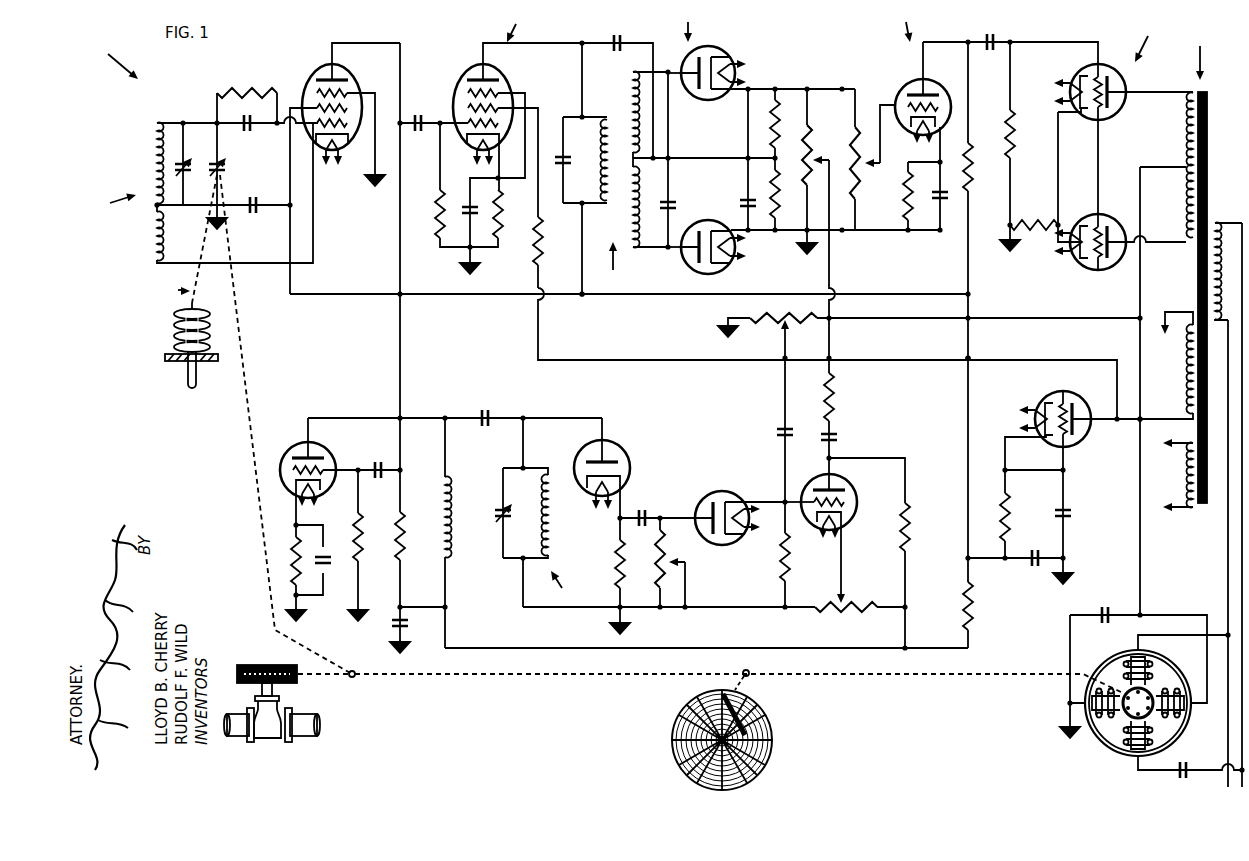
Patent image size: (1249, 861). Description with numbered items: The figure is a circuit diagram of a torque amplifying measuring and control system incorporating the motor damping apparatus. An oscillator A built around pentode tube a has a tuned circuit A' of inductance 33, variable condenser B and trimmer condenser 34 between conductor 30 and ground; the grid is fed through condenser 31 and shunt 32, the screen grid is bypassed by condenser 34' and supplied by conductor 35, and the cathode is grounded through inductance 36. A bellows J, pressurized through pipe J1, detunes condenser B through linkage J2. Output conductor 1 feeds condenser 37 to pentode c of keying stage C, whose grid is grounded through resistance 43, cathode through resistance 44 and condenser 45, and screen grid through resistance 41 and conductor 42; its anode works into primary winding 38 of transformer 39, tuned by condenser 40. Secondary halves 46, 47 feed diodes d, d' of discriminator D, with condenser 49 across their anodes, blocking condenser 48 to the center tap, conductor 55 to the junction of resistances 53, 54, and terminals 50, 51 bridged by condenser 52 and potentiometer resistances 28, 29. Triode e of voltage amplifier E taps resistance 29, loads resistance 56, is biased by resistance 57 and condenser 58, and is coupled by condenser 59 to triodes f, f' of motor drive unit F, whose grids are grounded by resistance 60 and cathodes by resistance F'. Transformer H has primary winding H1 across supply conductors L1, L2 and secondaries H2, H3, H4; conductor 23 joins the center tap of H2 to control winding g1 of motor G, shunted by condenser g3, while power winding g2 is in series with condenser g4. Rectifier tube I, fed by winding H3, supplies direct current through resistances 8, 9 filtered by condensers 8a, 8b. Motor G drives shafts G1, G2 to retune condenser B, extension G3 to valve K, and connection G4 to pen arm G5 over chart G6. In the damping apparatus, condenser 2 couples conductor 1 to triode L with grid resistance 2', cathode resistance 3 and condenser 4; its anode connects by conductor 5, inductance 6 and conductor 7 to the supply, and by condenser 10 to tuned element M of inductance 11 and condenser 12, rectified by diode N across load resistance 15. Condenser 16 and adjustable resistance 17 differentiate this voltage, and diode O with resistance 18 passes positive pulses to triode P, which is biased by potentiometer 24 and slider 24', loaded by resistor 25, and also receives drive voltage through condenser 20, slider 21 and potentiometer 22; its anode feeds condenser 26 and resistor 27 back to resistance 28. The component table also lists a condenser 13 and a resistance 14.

The conductor 1 is at (372, 43).
The coupling condenser 2 is at (361, 456).
The grid resistance 2' is at (367, 545).
The resistance 3 is at (297, 560).
The condenser 4 is at (328, 562).
The conductor 5 is at (348, 417).
The inductance 6 is at (445, 501).
The conductor 7 is at (693, 648).
The resistance 8 is at (960, 606).
The condenser 8a is at (1068, 514).
The condenser 8b is at (1032, 564).
The resistance 9 is at (1004, 511).
The condenser 10 is at (483, 414).
The inductance 11 is at (542, 533).
The adjustable condenser 12 is at (496, 518).
The condenser 13 is at (392, 624).
The resistance 14 is at (400, 537).
The load resistance 15 is at (619, 561).
The condenser 16 is at (642, 510).
The adjustable resistance 17 is at (660, 561).
The resistance 18 is at (784, 557).
The coupling condenser 20 is at (776, 432).
The slider contact 21 is at (782, 330).
The potentiometer resistance 22 is at (782, 317).
The conductor 23 is at (1138, 291).
The potentiometer resistance 24 is at (714, 618).
The slider contact 24' is at (860, 562).
The resistor 25 is at (905, 531).
The coupling condenser 26 is at (841, 438).
The isolation resistor 27 is at (834, 395).
The potentiometer resistance 28 is at (811, 130).
The second potentiometer resistance 29 is at (853, 147).
The conductor 30 is at (200, 122).
The condenser 31 is at (250, 128).
The resistance shunt 32 is at (249, 89).
The inductance 33 is at (165, 176).
The adjustable condenser 34 is at (176, 164).
The condenser 34' is at (223, 194).
The conductor 35 is at (342, 294).
The inductance 36 is at (165, 230).
The coupling condenser 37 is at (426, 119).
The primary winding 38 is at (585, 168).
The transformer 39 is at (612, 265).
The condenser 40 is at (571, 160).
The resistance 41 is at (539, 238).
The conductor 42 is at (536, 330).
The resistance 43 is at (438, 207).
The resistance 44 is at (501, 213).
The condenser 45 is at (473, 226).
The secondary winding half 46 is at (650, 112).
The secondary winding half 47 is at (650, 200).
The blocking condenser 48 is at (616, 35).
The condenser 49 is at (676, 204).
The terminal 50 is at (842, 87).
The terminal 51 is at (842, 234).
The condenser 52 is at (740, 196).
The resistance 53 is at (765, 129).
The resistance 54 is at (765, 198).
The conductor 55 is at (688, 158).
The resistance 56 is at (972, 174).
The resistance 57 is at (907, 192).
The condenser 58 is at (948, 199).
The coupling condenser 59 is at (985, 34).
The resistance 60 is at (1011, 127).
The oscillator portion A is at (119, 58).
The tuned resonant circuit A' is at (113, 201).
The variable condenser B is at (224, 164).
The modulator keying stage C is at (515, 24).
The frequency discriminator D is at (688, 21).
The voltage amplifier section E is at (906, 21).
The motor drive unit F is at (1144, 39).
The resistance F' is at (1045, 175).
The two-phase rebalancing motor G is at (1110, 655).
The rotating shaft connection G1 is at (462, 678).
The rotating shaft connection G2 is at (258, 448).
The shaft extension G3 is at (326, 674).
The connection G4 is at (742, 686).
The exhibiting element G5 is at (746, 713).
The record chart G6 is at (765, 745).
The transformer H is at (1201, 263).
The primary winding H1 is at (1228, 272).
The secondary winding H2 is at (1186, 186).
The secondary winding H3 is at (1184, 364).
The secondary winding H4 is at (1182, 442).
The half-wave rectifier tube I is at (1054, 392).
The device J is at (172, 322).
The pipe J1 is at (188, 372).
The mechanical linkage J2 is at (187, 239).
The control device K is at (268, 739).
The amplifying triode L is at (284, 456).
The alternating current supply conductor L1 is at (1226, 538).
The alternating current supply conductor L2 is at (1240, 567).
The tuned circuit element M is at (562, 587).
The diode N is at (618, 442).
The diode O is at (708, 504).
The triode P is at (814, 476).
The pentode vacuum tube a is at (322, 64).
The pentode valve c is at (470, 64).
The diode d is at (707, 64).
The diode d' is at (701, 252).
The triode e is at (910, 79).
The triode vacuum tube f is at (1123, 82).
The triode vacuum tube f' is at (1120, 195).
The control winding g1 is at (1152, 668).
The power winding g2 is at (1130, 734).
The condenser g3 is at (1106, 608).
The condenser g4 is at (1184, 766).